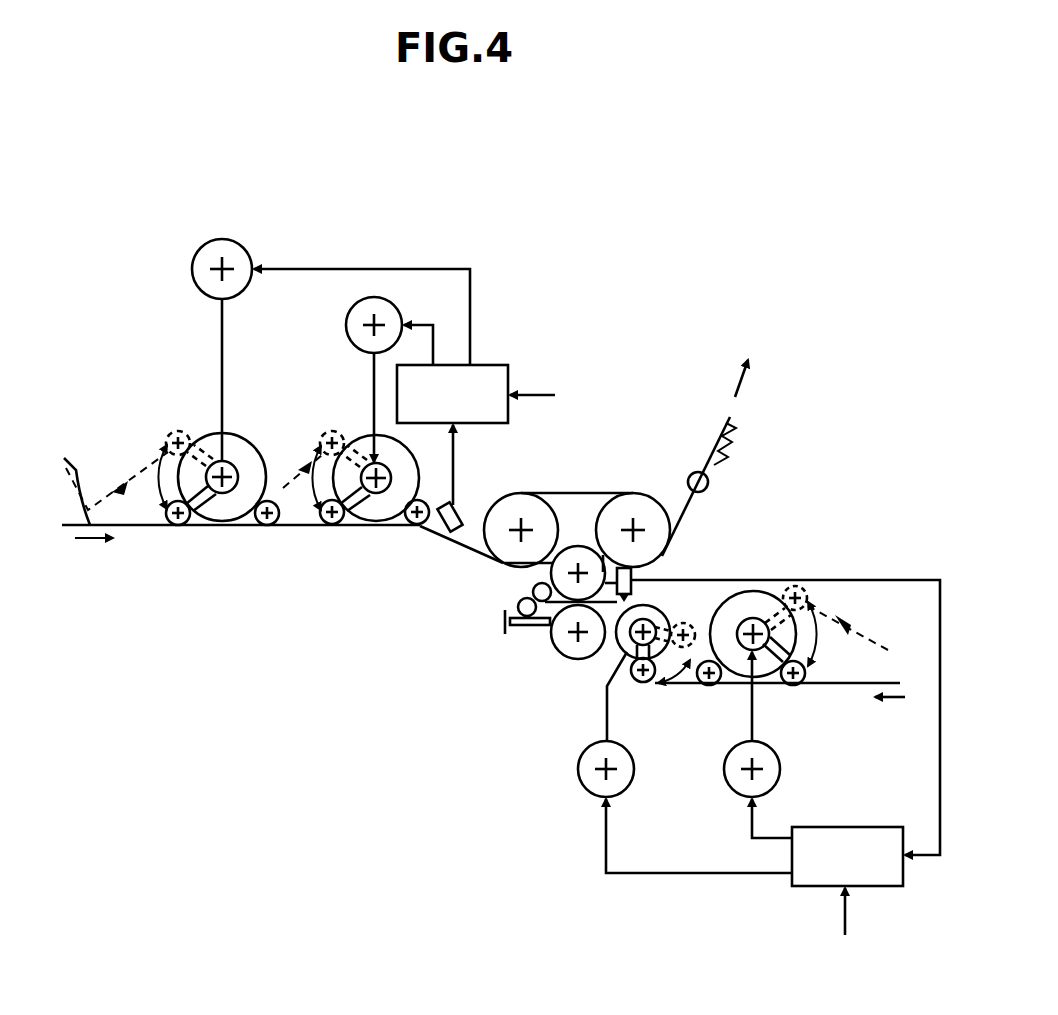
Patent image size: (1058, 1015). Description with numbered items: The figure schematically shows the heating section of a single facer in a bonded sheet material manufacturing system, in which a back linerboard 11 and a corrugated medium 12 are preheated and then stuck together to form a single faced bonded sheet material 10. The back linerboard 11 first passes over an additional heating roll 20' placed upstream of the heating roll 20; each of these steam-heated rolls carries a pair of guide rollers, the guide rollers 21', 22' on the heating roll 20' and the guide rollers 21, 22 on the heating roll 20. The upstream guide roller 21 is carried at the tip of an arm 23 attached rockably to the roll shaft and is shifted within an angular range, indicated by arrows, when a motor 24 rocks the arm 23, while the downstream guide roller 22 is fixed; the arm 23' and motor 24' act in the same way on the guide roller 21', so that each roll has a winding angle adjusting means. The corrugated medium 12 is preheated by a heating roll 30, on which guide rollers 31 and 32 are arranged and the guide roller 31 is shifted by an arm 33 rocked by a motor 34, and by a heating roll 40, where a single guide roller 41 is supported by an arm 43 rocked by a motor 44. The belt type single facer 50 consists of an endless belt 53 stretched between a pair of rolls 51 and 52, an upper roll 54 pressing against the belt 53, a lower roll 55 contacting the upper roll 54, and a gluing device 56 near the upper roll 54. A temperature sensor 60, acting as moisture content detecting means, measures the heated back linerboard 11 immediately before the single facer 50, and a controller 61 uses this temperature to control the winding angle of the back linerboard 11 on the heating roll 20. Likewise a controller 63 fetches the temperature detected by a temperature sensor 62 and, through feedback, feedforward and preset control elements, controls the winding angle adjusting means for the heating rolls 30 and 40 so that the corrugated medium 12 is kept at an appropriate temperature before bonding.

The single faced bonded sheet material 10 is at (730, 422).
The back linerboard 11 is at (68, 466).
The corrugated medium 12 is at (862, 695).
The heating roll 20 is at (376, 530).
The heating roll 20' is at (222, 529).
The guide roller 21 is at (322, 481).
The guide roller 21' is at (160, 489).
The guide roller 22 is at (423, 545).
The guide roller 22' is at (275, 541).
The arm 23 is at (359, 508).
The arm 23' is at (201, 514).
The motor 24 is at (362, 375).
The motor 24' is at (309, 327).
The heating roll 30 is at (770, 595).
The guide roller 31 is at (805, 685).
The guide roller 32 is at (720, 685).
The arm 33 is at (778, 665).
The motor 34 is at (726, 790).
The heating roll 40 is at (668, 612).
The guide roller 41 is at (683, 648).
The arm 43 is at (640, 660).
The motor 44 is at (582, 790).
The belt type single facer 50 is at (562, 476).
The roll 51 is at (520, 493).
The roll 52 is at (658, 495).
The endless belt 53 is at (600, 493).
The upper roll 54 is at (552, 578).
The lower roll 55 is at (562, 655).
The gluing device 56 is at (520, 630).
The temperature sensor 60 is at (458, 505).
The controller 61 is at (492, 363).
The temperature sensor 62 is at (640, 578).
The controller 63 is at (800, 890).